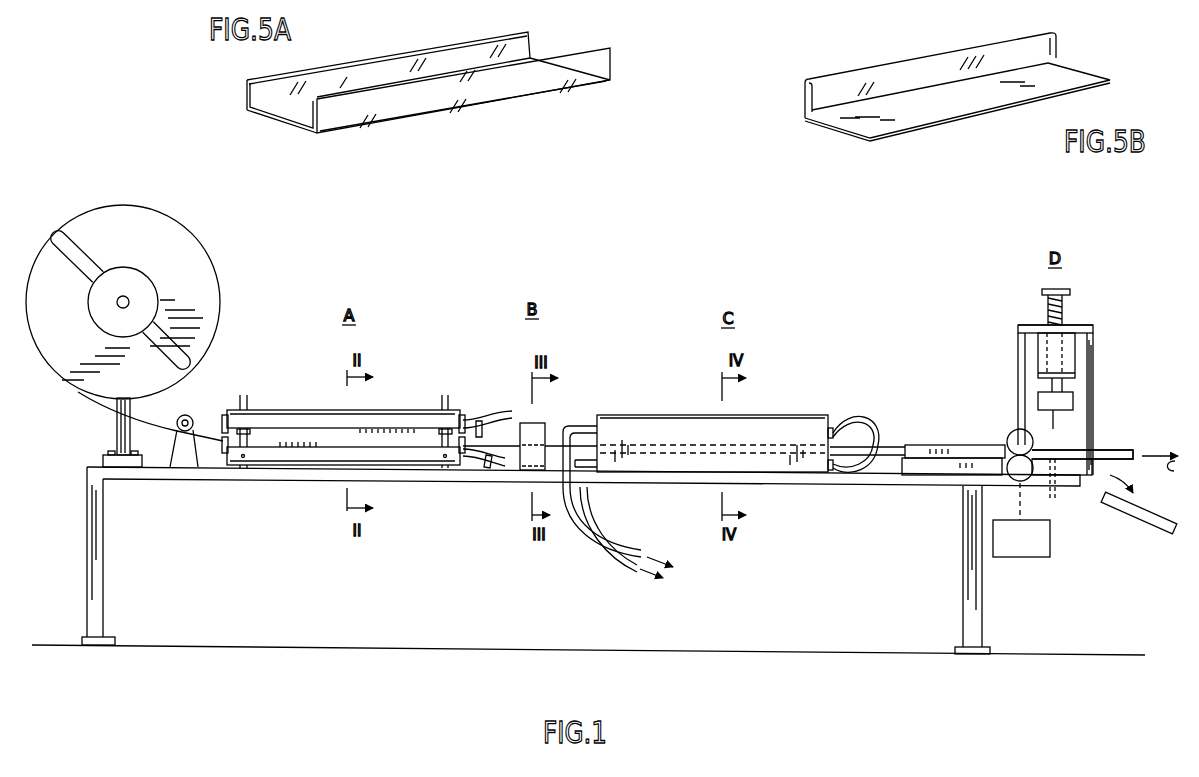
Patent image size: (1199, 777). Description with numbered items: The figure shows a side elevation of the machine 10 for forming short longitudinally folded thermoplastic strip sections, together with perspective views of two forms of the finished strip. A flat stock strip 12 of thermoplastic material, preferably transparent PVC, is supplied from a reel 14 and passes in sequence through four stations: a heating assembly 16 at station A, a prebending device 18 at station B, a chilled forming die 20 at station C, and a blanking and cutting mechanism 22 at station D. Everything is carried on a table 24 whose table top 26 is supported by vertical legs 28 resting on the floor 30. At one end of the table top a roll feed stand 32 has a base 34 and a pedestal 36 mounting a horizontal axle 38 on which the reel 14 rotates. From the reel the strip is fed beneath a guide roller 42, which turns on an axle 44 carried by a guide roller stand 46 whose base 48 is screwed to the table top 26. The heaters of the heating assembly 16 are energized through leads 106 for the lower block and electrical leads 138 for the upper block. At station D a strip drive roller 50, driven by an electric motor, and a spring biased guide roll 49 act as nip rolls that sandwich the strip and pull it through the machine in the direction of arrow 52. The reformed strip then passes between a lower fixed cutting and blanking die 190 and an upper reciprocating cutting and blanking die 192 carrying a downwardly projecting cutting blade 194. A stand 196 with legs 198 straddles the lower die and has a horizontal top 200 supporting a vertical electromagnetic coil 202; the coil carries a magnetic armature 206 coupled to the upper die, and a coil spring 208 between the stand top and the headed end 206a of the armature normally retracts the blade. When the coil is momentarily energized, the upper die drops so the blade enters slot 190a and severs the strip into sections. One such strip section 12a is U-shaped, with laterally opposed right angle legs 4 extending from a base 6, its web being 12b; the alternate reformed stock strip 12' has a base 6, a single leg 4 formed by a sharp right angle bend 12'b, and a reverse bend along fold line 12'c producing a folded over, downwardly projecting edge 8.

In FIG. 5A, the right angle leg 4 is at (360, 98).
In FIG. 5B, the right angle leg 4 is at (803, 97).
In FIG. 5A, the base 6 is at (287, 127).
In FIG. 5B, the base 6 is at (833, 132).
In FIG. 5B, the folded over edge 8 is at (857, 100).
In FIG. 1, the machine 10 is at (840, 365).
In FIG. 1, the stock strip 12 is at (605, 425).
In FIG. 5A, the strip section 12a is at (243, 112).
In FIG. 1, the strip section 12a is at (1147, 523).
In FIG. 5A, the channel web 12b is at (383, 123).
In FIG. 5B, the reformed stock strip 12' is at (902, 151).
In FIG. 5B, the right angle bend 12'b is at (780, 134).
In FIG. 5B, the fold line 12'c is at (797, 61).
In FIG. 1, the reel 14 is at (203, 287).
In FIG. 1, the heating assembly 16 is at (403, 385).
In FIG. 1, the prebending device 18 is at (543, 418).
In FIG. 1, the chilled forming die 20 is at (763, 408).
In FIG. 1, the blanking and cutting mechanism 22 is at (1017, 338).
In FIG. 1, the table 24 is at (183, 486).
In FIG. 1, the table top 26 is at (298, 480).
In FIG. 1, the vertical legs 28 is at (93, 525).
In FIG. 1, the floor 30 is at (185, 645).
In FIG. 1, the roll feed stand 32 is at (113, 432).
In FIG. 1, the base 34 is at (102, 458).
In FIG. 1, the pedestal 36 is at (117, 413).
In FIG. 1, the axle 38 is at (127, 298).
In FIG. 1, the guide roller 42 is at (178, 417).
In FIG. 1, the axle 44 is at (194, 413).
In FIG. 1, the guide roller stand 46 is at (190, 455).
In FIG. 1, the base 48 is at (180, 458).
In FIG. 1, the spring biased guide roll 49 is at (1012, 433).
In FIG. 1, the strip drive roller 50 is at (1002, 477).
In FIG. 1, the arrow 52 is at (1168, 469).
In FIG. 1, the leads 106 is at (487, 463).
In FIG. 1, the electrical leads 138 is at (480, 427).
In FIG. 1, the lower fixed cutting and blanking die 190 is at (1067, 458).
In FIG. 1, the slot 190a is at (1050, 490).
In FIG. 1, the upper reciprocating cutting and blanking die 192 is at (1067, 395).
In FIG. 1, the cutting blade 194 is at (1057, 430).
In FIG. 1, the stand 196 is at (1098, 362).
In FIG. 1, the legs 198 is at (1085, 467).
In FIG. 1, the horizontal top 200 is at (1093, 330).
In FIG. 1, the electromagnetic coil 202 is at (1038, 355).
In FIG. 1, the magnetic armature 206 is at (1047, 383).
In FIG. 1, the headed end 206a is at (1068, 290).
In FIG. 1, the coil spring 208 is at (1067, 312).